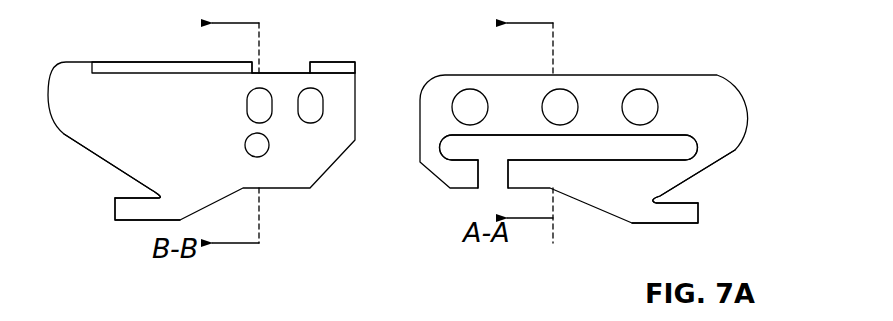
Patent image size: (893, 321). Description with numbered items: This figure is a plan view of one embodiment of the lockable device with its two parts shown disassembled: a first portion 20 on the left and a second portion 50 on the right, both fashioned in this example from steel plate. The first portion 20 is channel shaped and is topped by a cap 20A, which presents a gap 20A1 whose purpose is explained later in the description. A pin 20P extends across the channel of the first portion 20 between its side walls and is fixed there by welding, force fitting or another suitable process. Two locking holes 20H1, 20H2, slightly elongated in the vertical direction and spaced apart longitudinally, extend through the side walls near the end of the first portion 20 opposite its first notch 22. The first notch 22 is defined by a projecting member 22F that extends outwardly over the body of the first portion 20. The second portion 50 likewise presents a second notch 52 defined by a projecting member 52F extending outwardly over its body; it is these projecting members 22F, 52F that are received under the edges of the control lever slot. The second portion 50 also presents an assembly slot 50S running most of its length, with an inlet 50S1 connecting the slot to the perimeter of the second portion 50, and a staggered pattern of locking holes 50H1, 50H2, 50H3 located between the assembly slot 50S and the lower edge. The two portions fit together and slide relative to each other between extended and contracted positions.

The first portion 20 is at (150, 107).
The cap 20A is at (147, 66).
The gap 20A1 is at (277, 68).
The locking hole 20H1 is at (260, 107).
The locking hole 20H2 is at (312, 108).
The pin 20P is at (258, 148).
The first notch 22 is at (130, 188).
The projecting member 22F is at (110, 205).
The second portion 50 is at (732, 124).
The locking hole 50H1 is at (640, 108).
The locking hole 50H2 is at (562, 108).
The locking hole 50H3 is at (467, 103).
The assembly slot 50S is at (627, 150).
The inlet 50S1 is at (491, 168).
The second notch 52 is at (673, 198).
The projecting member 52F is at (700, 215).